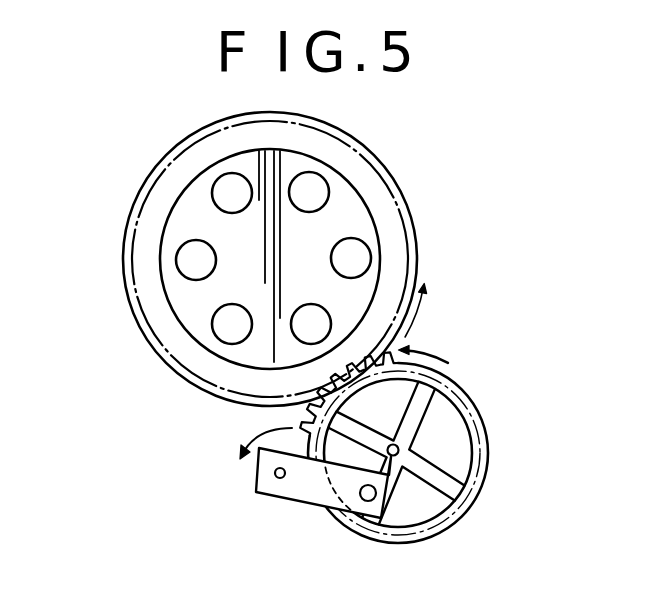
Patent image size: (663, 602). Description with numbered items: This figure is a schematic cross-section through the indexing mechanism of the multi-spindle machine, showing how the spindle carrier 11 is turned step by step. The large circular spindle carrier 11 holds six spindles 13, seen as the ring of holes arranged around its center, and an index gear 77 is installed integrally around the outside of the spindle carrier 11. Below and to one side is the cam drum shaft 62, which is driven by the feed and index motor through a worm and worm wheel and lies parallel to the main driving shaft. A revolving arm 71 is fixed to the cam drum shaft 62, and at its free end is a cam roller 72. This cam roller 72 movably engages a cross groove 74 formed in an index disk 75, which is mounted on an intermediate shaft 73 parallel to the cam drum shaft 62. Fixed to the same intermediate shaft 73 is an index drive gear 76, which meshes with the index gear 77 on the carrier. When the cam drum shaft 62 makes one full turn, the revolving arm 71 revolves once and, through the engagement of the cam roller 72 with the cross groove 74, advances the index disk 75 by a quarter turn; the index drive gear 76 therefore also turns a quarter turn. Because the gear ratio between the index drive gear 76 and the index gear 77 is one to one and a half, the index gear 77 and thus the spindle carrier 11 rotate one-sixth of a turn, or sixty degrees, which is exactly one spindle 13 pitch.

The spindle carrier 11 is at (379, 250).
The spindle 13 is at (212, 195).
The index gear 77 is at (409, 205).
The index drive gear 76 is at (468, 396).
The index disk 75 is at (458, 478).
The cross groove 74 is at (420, 463).
The intermediate shaft 73 is at (399, 457).
The cam roller 72 is at (363, 502).
The revolving arm 71 is at (288, 497).
The cam drum shaft 62 is at (275, 473).